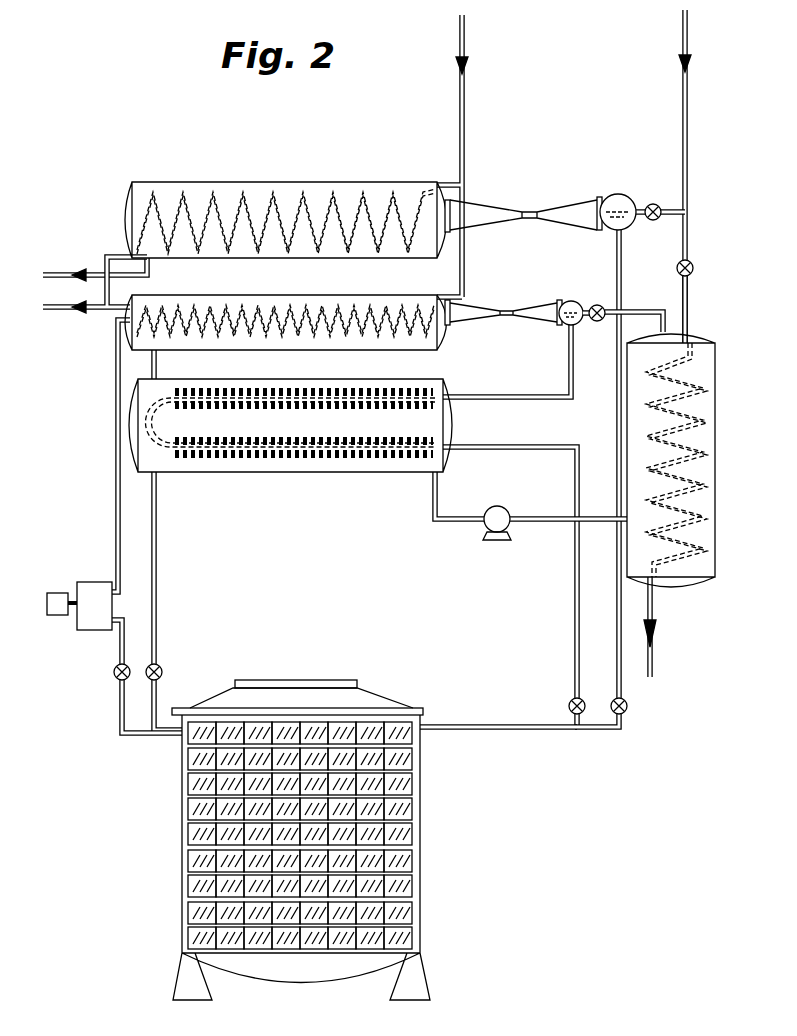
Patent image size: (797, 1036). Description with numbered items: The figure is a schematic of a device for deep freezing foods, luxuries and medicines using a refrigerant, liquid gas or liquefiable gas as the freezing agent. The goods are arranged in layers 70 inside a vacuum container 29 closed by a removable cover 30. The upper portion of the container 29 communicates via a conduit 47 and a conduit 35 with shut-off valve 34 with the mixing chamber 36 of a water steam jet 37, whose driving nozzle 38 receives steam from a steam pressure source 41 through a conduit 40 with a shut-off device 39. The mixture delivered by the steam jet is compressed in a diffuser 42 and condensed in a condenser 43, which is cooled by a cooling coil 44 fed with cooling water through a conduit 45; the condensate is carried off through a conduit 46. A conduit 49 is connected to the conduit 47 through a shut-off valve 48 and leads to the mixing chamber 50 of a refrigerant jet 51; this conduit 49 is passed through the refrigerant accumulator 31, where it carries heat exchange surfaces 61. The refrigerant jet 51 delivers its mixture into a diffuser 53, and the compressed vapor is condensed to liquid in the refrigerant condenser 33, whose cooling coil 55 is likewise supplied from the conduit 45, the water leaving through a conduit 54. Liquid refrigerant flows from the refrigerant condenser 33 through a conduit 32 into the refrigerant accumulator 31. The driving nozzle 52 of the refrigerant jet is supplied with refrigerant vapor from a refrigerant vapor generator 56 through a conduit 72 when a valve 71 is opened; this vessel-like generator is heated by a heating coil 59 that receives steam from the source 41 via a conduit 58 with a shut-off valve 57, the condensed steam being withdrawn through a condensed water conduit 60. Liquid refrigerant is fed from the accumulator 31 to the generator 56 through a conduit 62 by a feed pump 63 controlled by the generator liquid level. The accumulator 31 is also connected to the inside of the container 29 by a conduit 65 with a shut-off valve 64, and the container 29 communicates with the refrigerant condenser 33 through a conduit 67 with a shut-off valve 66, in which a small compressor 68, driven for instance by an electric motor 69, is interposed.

The vacuum container 29 is at (422, 790).
The removable cover 30 is at (388, 689).
The refrigerant accumulator 31 is at (418, 380).
The conduit 32 is at (156, 366).
The refrigerant condenser 33 is at (385, 295).
The shut-off valve 34 is at (627, 714).
The conduit 35 is at (624, 694).
The mixing chamber 36 is at (630, 232).
The water steam jet 37 is at (614, 193).
The driving nozzle 38 is at (628, 206).
The shut-off device 39 is at (653, 205).
The conduit 40 is at (670, 216).
The steam pressure source 41 is at (683, 95).
The diffuser 42 is at (497, 206).
The condenser 43 is at (383, 181).
The cooling coil 44 is at (172, 200).
The conduit 45 is at (460, 88).
The conduit 46 is at (90, 272).
The conduit 47 is at (500, 730).
The shut-off valve 48 is at (568, 706).
The conduit 49 is at (573, 612).
The mixing chamber 50 is at (569, 302).
The refrigerant jet 51 is at (578, 295).
The driving nozzle 52 is at (567, 326).
The diffuser 53 is at (493, 323).
The conduit 54 is at (95, 311).
The cooling coil 55 is at (252, 305).
The refrigerant vapor generator 56 is at (700, 340).
The shut-off valve 57 is at (693, 268).
The conduit 58 is at (688, 290).
The heating coil 59 is at (703, 521).
The condensed water conduit 60 is at (655, 616).
The heat exchange surfaces 61 is at (290, 462).
The conduit 62 is at (433, 498).
The feed pump 63 is at (508, 510).
The shut-off valve 64 is at (164, 671).
The conduit 65 is at (158, 566).
The shut-off valve 66 is at (113, 673).
The conduit 67 is at (116, 505).
The compressor 68 is at (94, 582).
The electric motor 69 is at (58, 616).
The layers 70 is at (188, 784).
The valve 71 is at (597, 322).
The conduit 72 is at (648, 311).